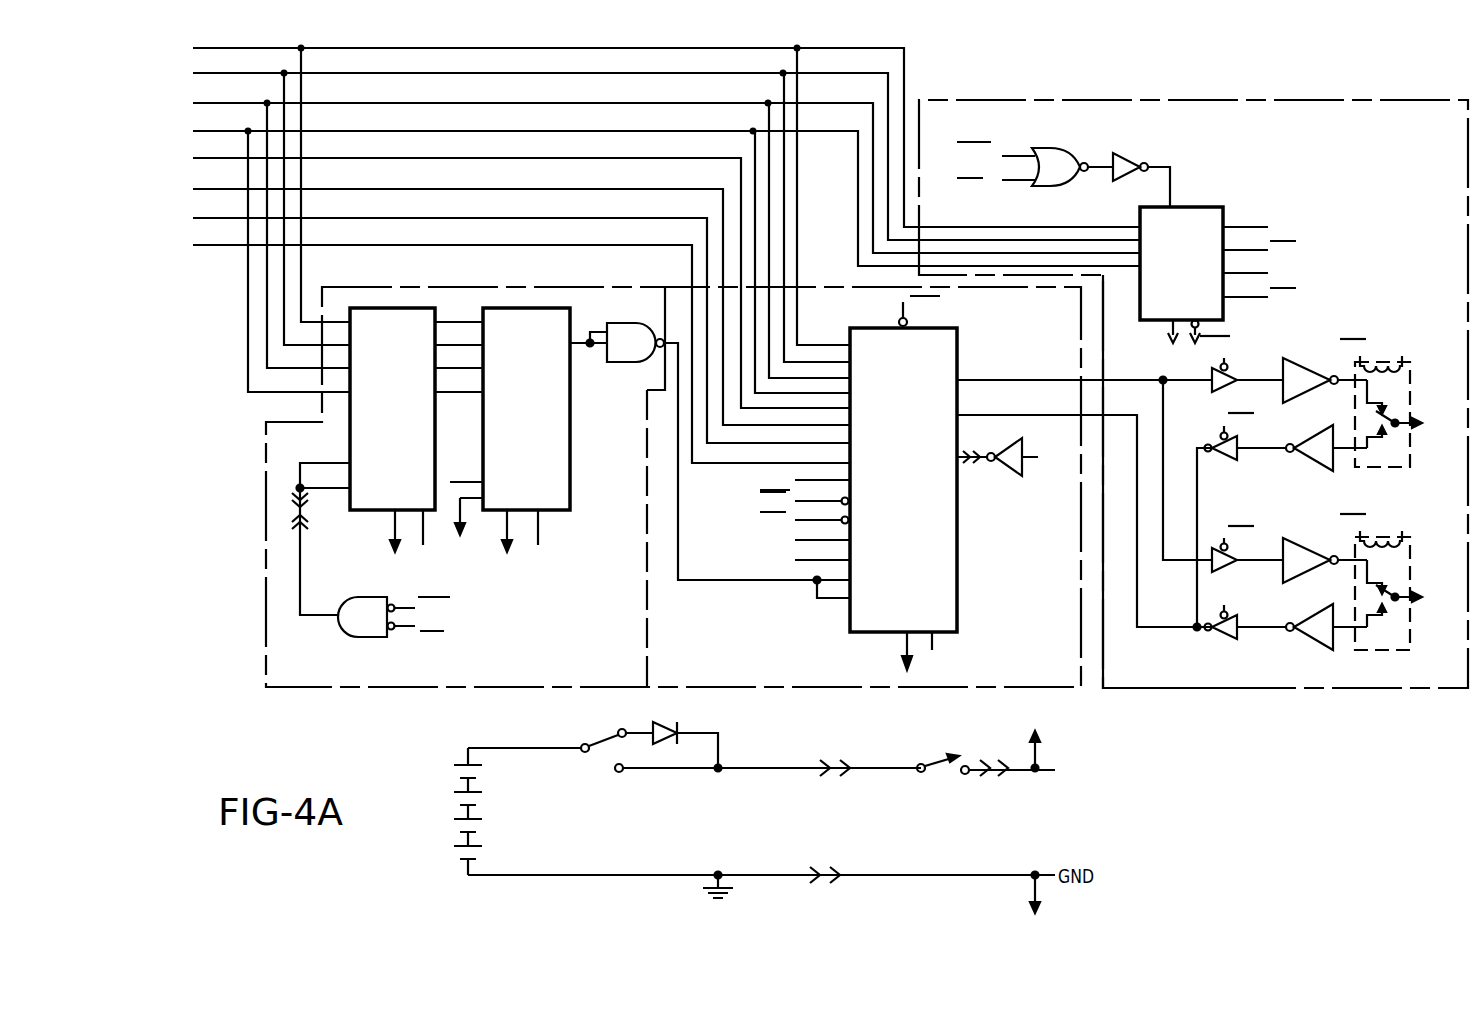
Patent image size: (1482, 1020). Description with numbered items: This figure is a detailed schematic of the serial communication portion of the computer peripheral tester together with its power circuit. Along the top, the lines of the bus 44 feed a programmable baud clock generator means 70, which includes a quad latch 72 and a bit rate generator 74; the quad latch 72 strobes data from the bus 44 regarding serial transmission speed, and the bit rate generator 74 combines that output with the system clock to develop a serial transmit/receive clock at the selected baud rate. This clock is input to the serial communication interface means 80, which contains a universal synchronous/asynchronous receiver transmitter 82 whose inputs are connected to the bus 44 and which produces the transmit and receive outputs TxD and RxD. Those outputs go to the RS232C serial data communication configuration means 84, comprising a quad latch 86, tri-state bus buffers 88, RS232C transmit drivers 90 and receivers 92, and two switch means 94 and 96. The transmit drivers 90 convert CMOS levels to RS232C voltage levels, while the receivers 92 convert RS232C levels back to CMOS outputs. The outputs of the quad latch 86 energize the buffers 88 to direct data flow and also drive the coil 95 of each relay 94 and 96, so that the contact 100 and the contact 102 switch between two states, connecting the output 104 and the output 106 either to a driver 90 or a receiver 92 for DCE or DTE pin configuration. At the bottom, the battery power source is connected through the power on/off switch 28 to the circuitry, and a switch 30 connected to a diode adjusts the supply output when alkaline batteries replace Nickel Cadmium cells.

The bus 44 is at (412, 140).
The programmable baud clock generator means 70 is at (570, 262).
The quad latch 72 is at (386, 310).
The bit rate generator 74 is at (566, 500).
The serial communication interface means 80 is at (812, 330).
The universal synchronous/asynchronous receiver transmitter 82 is at (957, 597).
The RS232C serial data communication configuration means 84 is at (1350, 124).
The quad latch 86 is at (1203, 207).
The tri-state bus buffers 88 is at (1212, 386).
The RS232C transmit drivers 90 is at (1302, 357).
The RS232C receivers 92 is at (1312, 436).
The switch means 94 is at (1400, 396).
The coil 95 is at (1370, 362).
The switch means 96 is at (1400, 574).
The contact 100 is at (1402, 418).
The contact 102 is at (1398, 614).
The output 104 is at (1398, 438).
The output 106 is at (1402, 592).
The switch 30 is at (580, 745).
The power on/off switch 28 is at (932, 760).